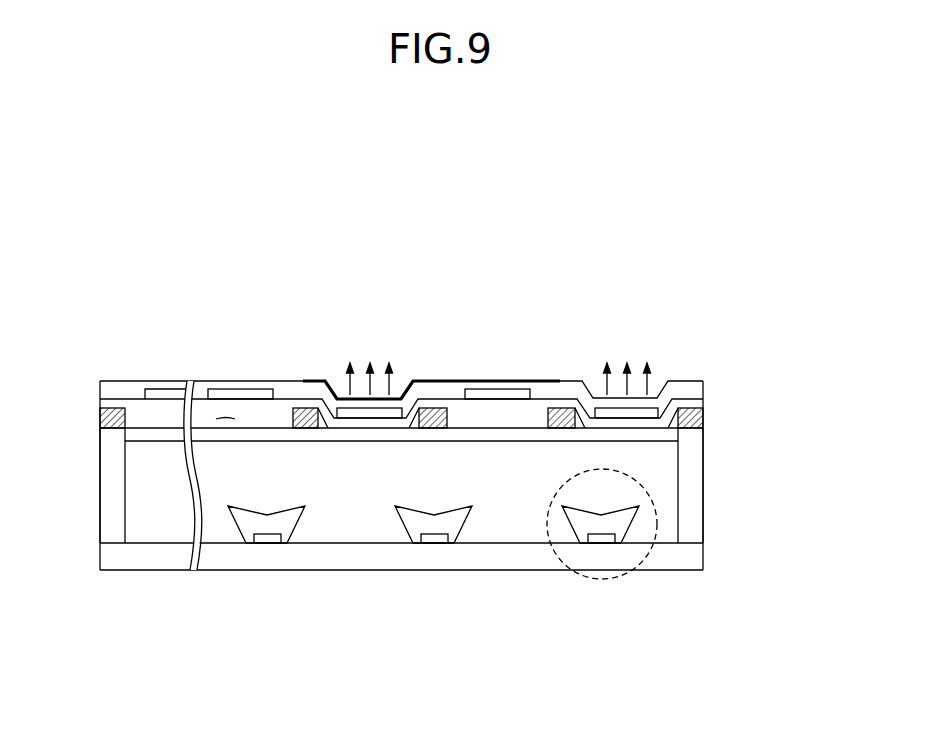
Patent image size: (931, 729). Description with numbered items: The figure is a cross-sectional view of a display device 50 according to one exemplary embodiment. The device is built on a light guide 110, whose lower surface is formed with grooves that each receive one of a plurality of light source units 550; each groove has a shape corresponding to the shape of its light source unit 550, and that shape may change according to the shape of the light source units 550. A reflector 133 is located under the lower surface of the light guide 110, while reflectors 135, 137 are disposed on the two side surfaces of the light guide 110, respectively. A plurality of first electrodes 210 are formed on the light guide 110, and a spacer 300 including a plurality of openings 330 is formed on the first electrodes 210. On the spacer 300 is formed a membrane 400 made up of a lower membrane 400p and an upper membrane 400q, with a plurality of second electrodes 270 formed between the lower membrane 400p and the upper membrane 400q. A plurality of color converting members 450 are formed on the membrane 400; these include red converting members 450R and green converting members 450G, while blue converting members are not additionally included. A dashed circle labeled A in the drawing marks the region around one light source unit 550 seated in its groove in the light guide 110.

The display device 50 is at (335, 261).
The light guide 110 is at (502, 487).
The reflector 133 is at (252, 552).
The reflector 135 is at (113, 490).
The reflector 137 is at (690, 513).
The first electrode 210 is at (335, 432).
The second electrode 270 is at (253, 395).
The spacer 300 is at (100, 417).
The opening 330 is at (226, 417).
The membrane 400 is at (796, 355).
The lower membrane 400p is at (690, 402).
The upper membrane 400q is at (690, 381).
The color converting member 450 is at (505, 306).
The red converting member 450R is at (419, 380).
The green converting member 450G is at (493, 380).
The light source unit 550 is at (396, 529).
The region A is at (601, 590).